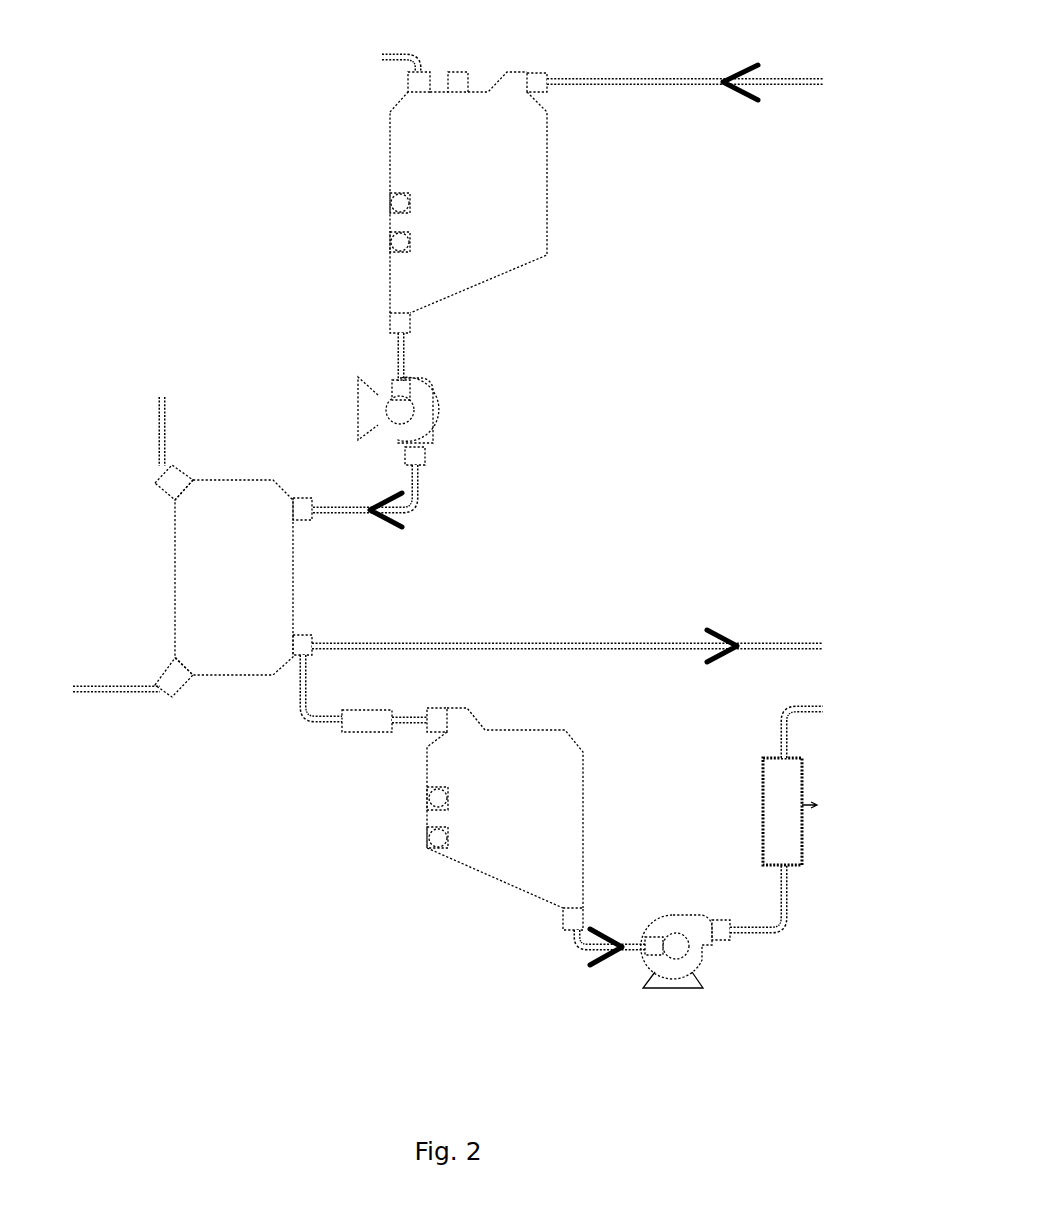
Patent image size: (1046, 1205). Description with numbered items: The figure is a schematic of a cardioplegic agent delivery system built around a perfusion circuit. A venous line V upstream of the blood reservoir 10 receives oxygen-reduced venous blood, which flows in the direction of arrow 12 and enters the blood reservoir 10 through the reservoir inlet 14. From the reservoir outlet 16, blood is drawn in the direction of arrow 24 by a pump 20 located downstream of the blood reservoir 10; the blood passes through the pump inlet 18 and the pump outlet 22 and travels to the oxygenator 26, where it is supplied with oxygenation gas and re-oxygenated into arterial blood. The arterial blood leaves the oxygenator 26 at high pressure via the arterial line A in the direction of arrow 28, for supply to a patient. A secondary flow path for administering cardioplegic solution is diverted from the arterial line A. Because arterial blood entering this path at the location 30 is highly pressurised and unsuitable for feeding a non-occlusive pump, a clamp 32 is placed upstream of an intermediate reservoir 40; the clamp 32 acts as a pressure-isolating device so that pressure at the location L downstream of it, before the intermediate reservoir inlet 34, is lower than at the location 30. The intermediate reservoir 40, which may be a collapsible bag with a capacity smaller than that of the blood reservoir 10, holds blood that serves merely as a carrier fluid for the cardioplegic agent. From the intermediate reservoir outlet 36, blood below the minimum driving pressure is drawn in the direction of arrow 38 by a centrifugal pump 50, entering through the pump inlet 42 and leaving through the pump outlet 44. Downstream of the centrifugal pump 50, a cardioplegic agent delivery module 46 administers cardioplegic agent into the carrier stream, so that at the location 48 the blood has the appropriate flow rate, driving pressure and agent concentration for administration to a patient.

The blood reservoir 10 is at (449, 169).
The arrow indicating blood flow direction in the venous line 12 is at (741, 70).
The reservoir inlet 14 is at (534, 72).
The reservoir outlet 16 is at (390, 323).
The pump inlet 18 is at (411, 380).
The pump 20 is at (358, 408).
The pump outlet 22 is at (426, 456).
The arrow indicating blood flow direction from the reservoir 24 is at (374, 515).
The oxygenator 26 is at (214, 592).
The arrow indicating arterial blood flow direction 28 is at (728, 640).
The location upstream of the clamp 30 is at (300, 711).
The clamp 32 is at (353, 734).
The intermediate reservoir inlet 34 is at (440, 708).
The intermediate reservoir outlet 36 is at (563, 920).
The arrow indicating flow direction from the intermediate reservoir 38 is at (607, 968).
The intermediate reservoir 40 is at (489, 789).
The pump inlet 42 is at (642, 943).
The pump outlet 44 is at (718, 920).
The cardioplegic agent delivery module 46 is at (763, 775).
The location downstream of the delivery module 48 is at (780, 720).
The centrifugal pump 50 is at (688, 913).
The venous line V is at (623, 78).
The arterial line A is at (496, 641).
The location downstream of the clamp L is at (407, 727).